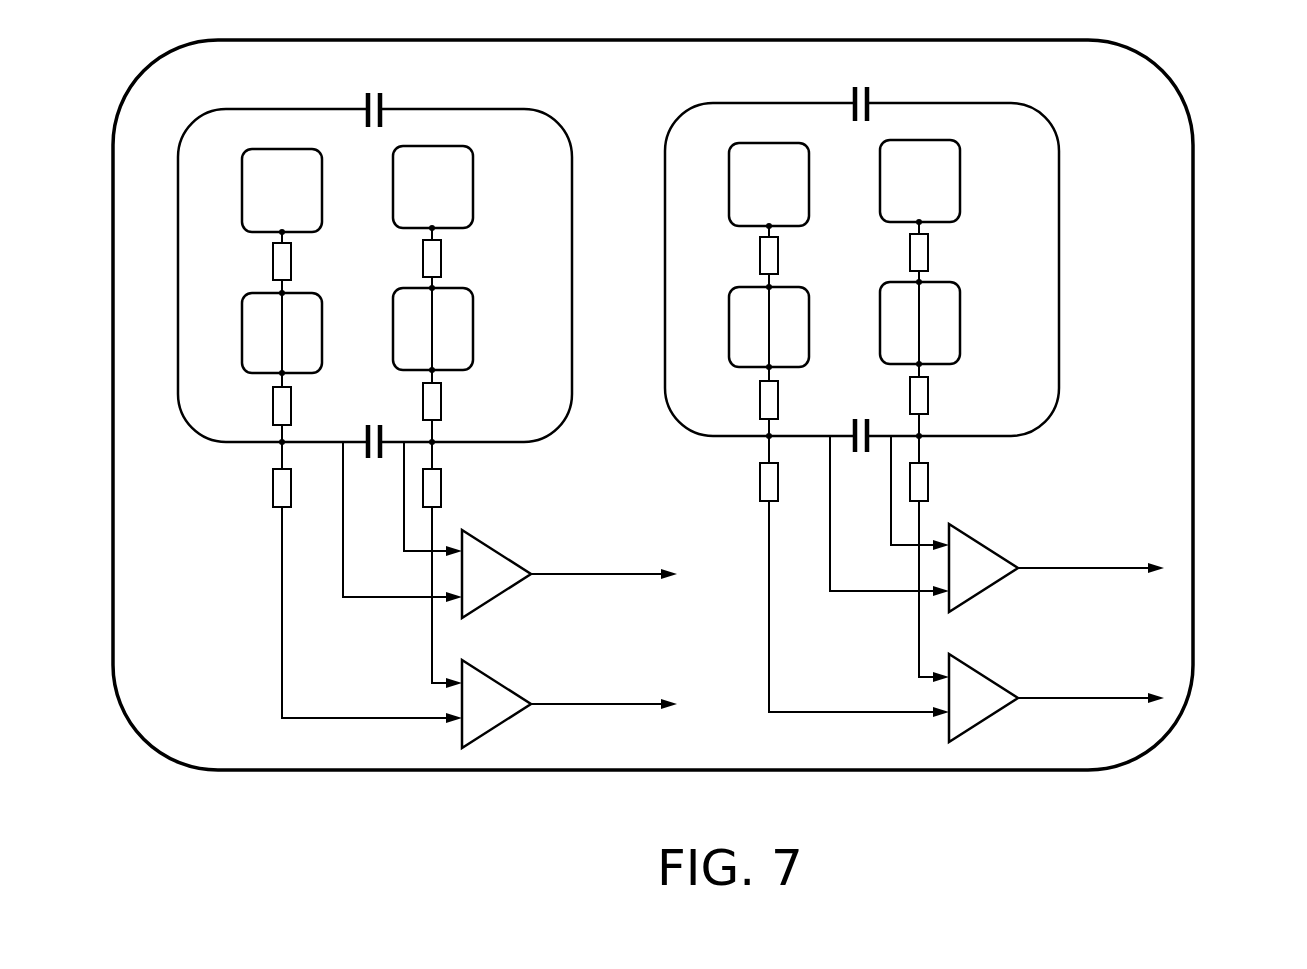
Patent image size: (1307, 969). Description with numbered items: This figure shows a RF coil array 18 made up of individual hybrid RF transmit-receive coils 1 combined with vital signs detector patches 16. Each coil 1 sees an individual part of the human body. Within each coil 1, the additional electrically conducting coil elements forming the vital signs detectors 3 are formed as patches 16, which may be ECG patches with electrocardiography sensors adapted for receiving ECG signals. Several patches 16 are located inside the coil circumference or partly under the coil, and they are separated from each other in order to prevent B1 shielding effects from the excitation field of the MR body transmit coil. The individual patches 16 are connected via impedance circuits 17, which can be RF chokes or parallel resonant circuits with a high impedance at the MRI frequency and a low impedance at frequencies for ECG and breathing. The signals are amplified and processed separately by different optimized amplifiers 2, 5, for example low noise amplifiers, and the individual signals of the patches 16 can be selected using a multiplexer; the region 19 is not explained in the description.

The RF transmit-receive coil 1 is at (229, 460).
The amplifier 2 is at (500, 548).
The vital signs detector 3 is at (226, 144).
The amplifier 5 is at (502, 680).
The vital signs detector patch 16 is at (323, 183).
The impedance circuit 17 is at (292, 258).
The RF coil array 18 is at (1206, 454).
The gap between sensing units 19 is at (149, 379).